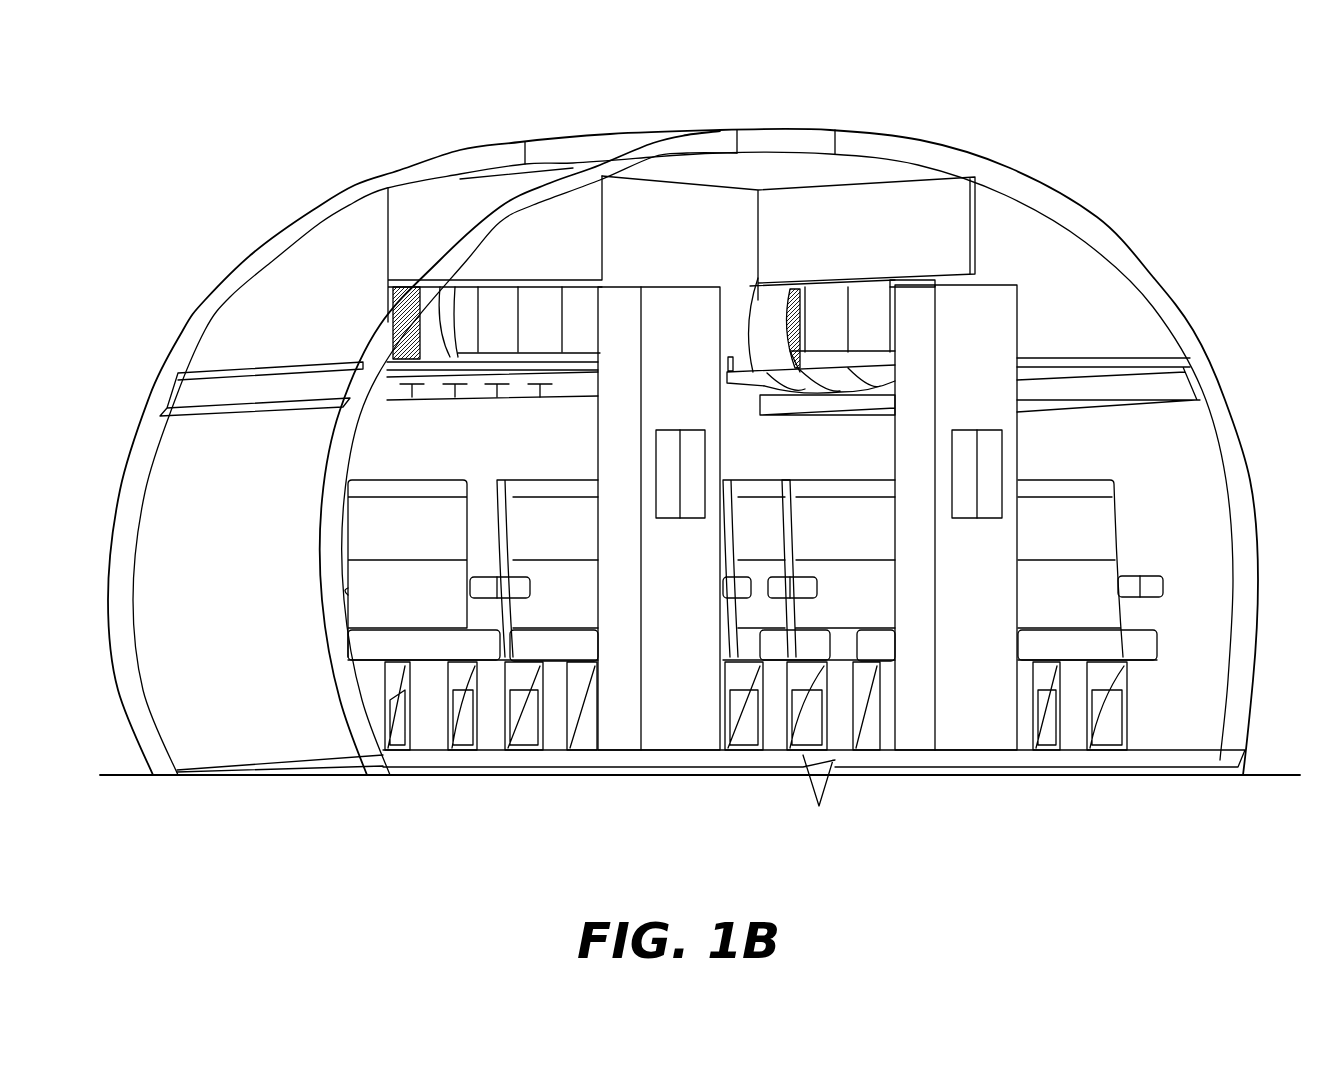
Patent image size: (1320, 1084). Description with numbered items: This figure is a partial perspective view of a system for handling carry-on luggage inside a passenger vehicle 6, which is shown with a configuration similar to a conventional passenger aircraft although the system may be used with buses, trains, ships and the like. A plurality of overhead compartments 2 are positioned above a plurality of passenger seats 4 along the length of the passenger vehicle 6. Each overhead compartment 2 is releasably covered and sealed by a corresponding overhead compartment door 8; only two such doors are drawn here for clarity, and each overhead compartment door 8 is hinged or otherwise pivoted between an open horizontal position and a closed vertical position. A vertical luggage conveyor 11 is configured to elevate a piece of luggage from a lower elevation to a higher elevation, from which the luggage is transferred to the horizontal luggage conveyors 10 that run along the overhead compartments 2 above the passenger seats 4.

The overhead compartment 2 is at (556, 252).
The passenger seat 4 is at (490, 721).
The passenger vehicle 6 is at (917, 147).
The overhead compartment door 8 is at (767, 302).
The horizontal luggage conveyor 10 is at (878, 380).
The vertical luggage conveyor 11 is at (670, 721).